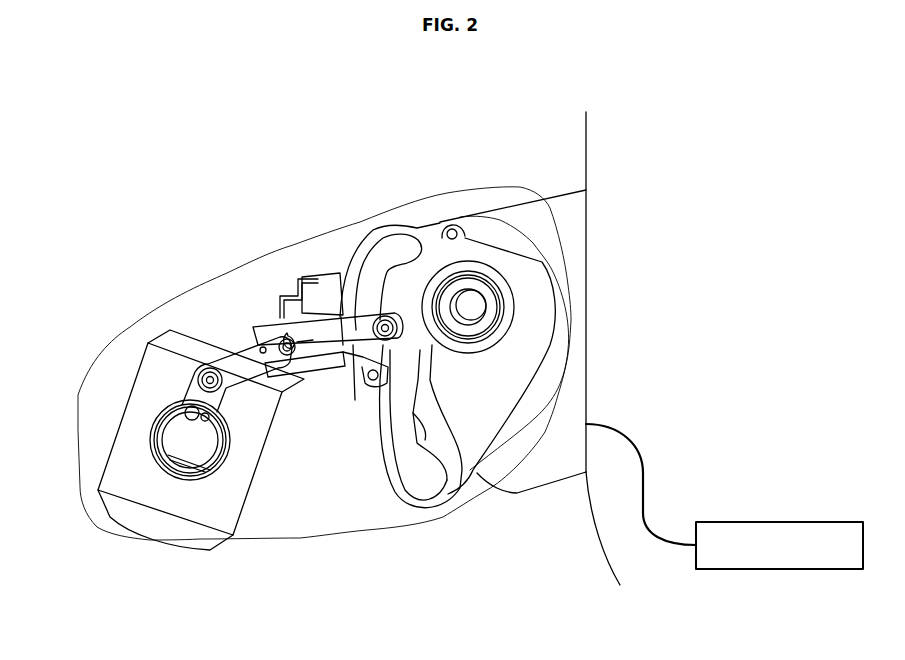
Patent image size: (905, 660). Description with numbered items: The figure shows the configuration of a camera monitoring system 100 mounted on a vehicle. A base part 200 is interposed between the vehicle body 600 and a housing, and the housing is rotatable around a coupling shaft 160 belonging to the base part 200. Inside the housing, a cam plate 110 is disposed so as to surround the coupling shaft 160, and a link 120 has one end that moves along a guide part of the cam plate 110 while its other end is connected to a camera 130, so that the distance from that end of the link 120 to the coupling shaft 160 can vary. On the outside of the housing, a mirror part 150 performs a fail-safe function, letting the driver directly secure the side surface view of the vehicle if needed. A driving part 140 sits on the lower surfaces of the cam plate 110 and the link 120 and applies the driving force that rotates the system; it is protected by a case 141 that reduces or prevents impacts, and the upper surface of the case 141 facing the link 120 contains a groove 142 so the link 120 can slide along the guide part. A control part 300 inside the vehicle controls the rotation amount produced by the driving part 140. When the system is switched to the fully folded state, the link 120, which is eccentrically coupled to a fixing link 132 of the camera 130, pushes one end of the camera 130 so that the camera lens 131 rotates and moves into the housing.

The camera monitoring system 100 is at (372, 167).
The cam plate 110 is at (507, 412).
The link 120 is at (322, 345).
The camera 130 is at (238, 518).
The camera lens 131 is at (170, 537).
The fixing link 132 is at (193, 397).
The driving part 140 is at (290, 290).
The case 141 is at (325, 292).
The groove 142 is at (283, 375).
The mirror part 150 is at (443, 517).
The coupling shaft 160 is at (480, 293).
The base part 200 is at (563, 213).
The control part 300 is at (778, 569).
The vehicle body 600 is at (586, 127).